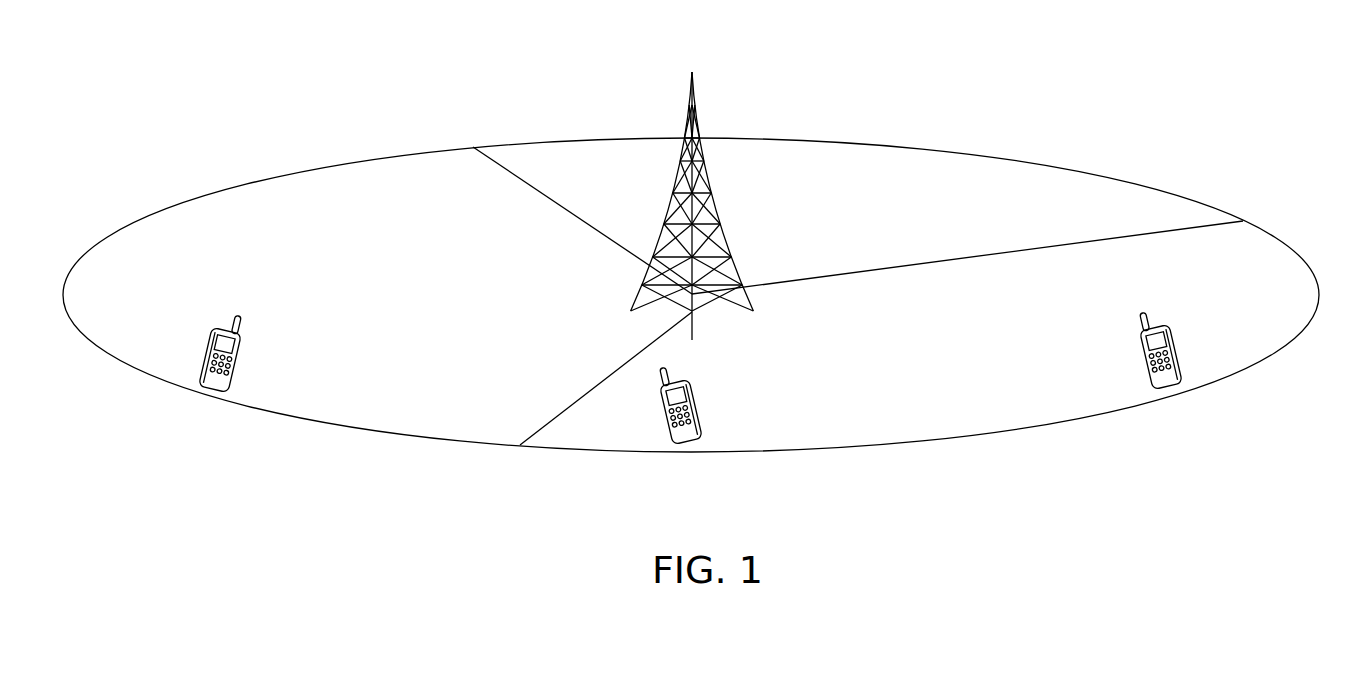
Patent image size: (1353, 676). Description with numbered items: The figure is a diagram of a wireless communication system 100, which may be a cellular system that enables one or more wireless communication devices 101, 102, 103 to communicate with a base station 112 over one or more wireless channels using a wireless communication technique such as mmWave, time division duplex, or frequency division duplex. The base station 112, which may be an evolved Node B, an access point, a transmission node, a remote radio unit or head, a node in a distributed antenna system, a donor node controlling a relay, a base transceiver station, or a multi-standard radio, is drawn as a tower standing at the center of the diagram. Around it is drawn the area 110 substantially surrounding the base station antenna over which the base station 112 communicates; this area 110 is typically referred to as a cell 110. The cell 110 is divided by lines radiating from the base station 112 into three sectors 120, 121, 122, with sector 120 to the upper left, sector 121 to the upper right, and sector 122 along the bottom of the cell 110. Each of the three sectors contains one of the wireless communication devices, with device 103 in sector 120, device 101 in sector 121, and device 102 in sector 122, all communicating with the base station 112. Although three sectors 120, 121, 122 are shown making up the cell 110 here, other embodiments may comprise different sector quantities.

The wireless communication system 100 is at (1142, 122).
The cell 110 is at (1246, 222).
The base station 112 is at (694, 96).
The sector 120 is at (323, 190).
The sector 121 is at (878, 165).
The sector 122 is at (927, 403).
The wireless communication device 101 is at (1180, 340).
The wireless communication device 102 is at (700, 396).
The wireless communication device 103 is at (202, 342).